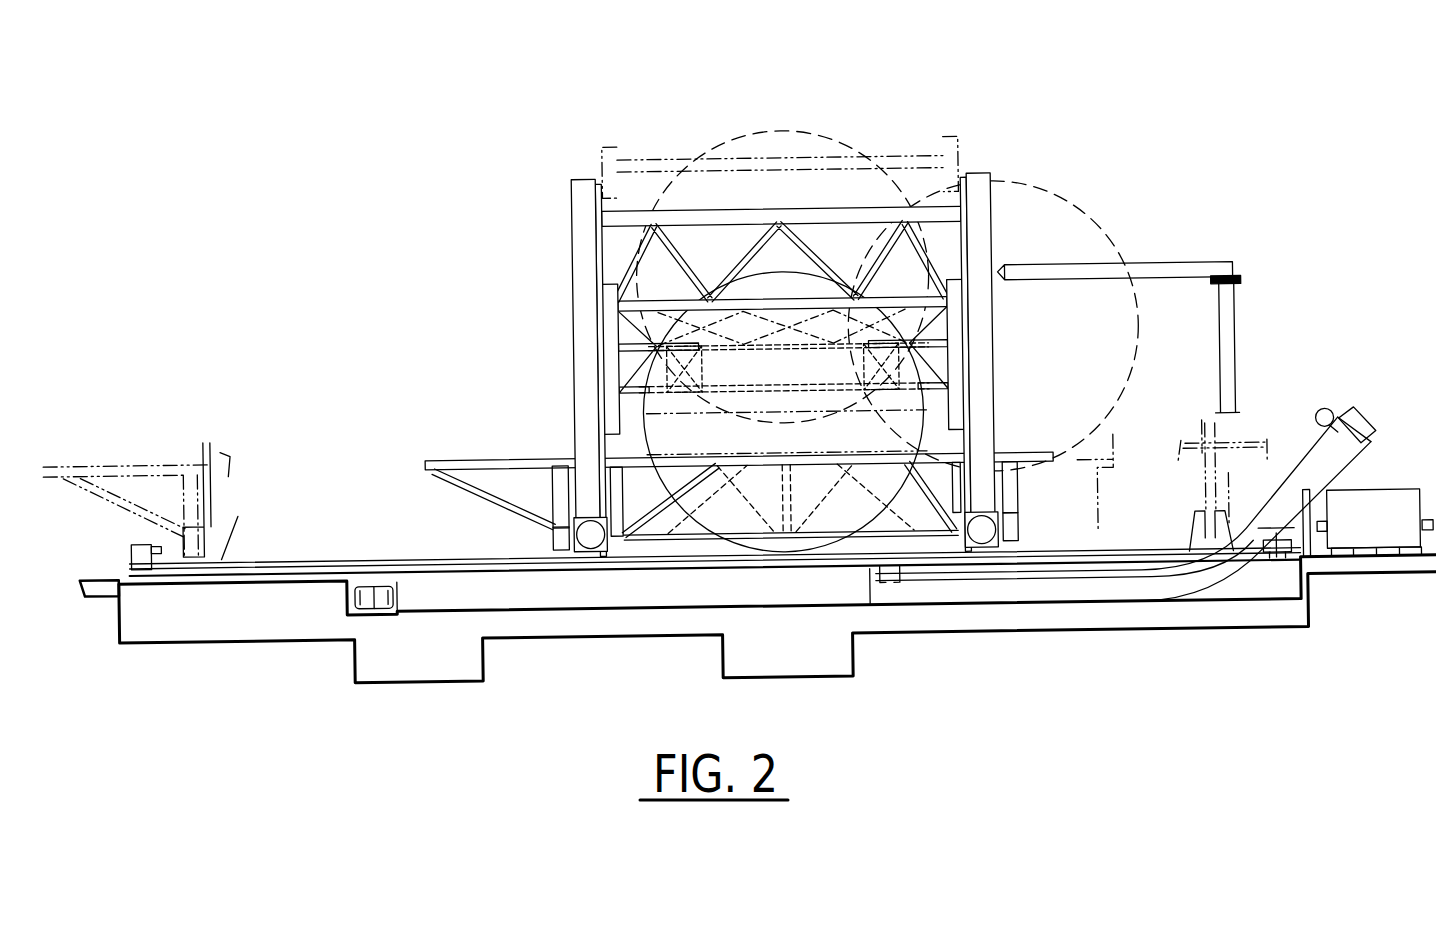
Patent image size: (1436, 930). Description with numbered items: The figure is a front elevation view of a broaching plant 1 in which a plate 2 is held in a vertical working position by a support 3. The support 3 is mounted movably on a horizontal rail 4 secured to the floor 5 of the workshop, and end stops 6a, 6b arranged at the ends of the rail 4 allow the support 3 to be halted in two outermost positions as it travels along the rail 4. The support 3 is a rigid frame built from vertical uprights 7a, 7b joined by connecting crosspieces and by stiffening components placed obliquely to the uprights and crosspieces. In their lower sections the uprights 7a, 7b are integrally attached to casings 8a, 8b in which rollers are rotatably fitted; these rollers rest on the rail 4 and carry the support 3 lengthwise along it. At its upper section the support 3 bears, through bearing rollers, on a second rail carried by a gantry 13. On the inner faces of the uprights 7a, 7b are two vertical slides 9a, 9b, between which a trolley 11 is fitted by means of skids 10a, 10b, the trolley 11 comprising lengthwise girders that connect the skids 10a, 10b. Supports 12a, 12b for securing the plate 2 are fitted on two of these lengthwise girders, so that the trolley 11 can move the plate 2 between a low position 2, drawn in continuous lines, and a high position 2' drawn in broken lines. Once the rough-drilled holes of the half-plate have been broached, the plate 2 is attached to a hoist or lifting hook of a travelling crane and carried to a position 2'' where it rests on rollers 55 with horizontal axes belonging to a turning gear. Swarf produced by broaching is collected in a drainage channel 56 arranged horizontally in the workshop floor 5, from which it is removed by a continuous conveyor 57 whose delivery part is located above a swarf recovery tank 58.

The broaching plant 1 is at (1096, 112).
The plate 2 is at (789, 411).
The high position of the plate 2' is at (782, 253).
The position of the plate on turning gear 2'' is at (1002, 316).
The support 3 is at (560, 182).
The horizontal rail 4 is at (464, 557).
The floor 5 is at (279, 634).
The end stop 6a is at (133, 552).
The end stop 6b is at (1271, 568).
The vertical upright 7a is at (580, 338).
The vertical upright 7b is at (983, 344).
The casing 8a is at (566, 538).
The casing 8b is at (999, 536).
The vertical slide 9a is at (595, 226).
The vertical slide 9b is at (988, 247).
The skid 10a is at (613, 387).
The skid 10b is at (983, 397).
The trolley 11 is at (675, 305).
The support for securing the plate 12a is at (692, 395).
The support for securing the plate 12b is at (882, 394).
The gantry 13 is at (1188, 275).
The rollers 55 is at (1010, 470).
The drainage channel 56 is at (612, 584).
The continuous conveyor 57 is at (369, 585).
The swarf recovery tank 58 is at (1351, 529).